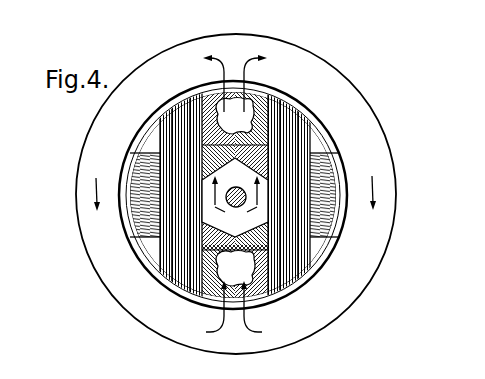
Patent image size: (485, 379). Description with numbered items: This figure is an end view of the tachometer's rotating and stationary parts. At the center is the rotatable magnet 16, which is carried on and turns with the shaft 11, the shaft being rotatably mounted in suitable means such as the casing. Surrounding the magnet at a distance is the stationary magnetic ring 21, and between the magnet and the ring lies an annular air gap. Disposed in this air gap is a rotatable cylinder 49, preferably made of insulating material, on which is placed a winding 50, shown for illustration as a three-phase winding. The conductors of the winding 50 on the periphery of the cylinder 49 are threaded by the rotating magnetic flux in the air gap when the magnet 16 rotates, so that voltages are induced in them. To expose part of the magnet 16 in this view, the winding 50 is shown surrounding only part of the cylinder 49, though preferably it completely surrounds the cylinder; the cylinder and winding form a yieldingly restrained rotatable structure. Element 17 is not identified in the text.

The ring 21 is at (247, 40).
The winding 50 is at (298, 108).
The rotatable cylinder 49 is at (322, 143).
The magnet 16 is at (153, 243).
The rotor 17 is at (222, 207).
The shaft 11 is at (239, 187).